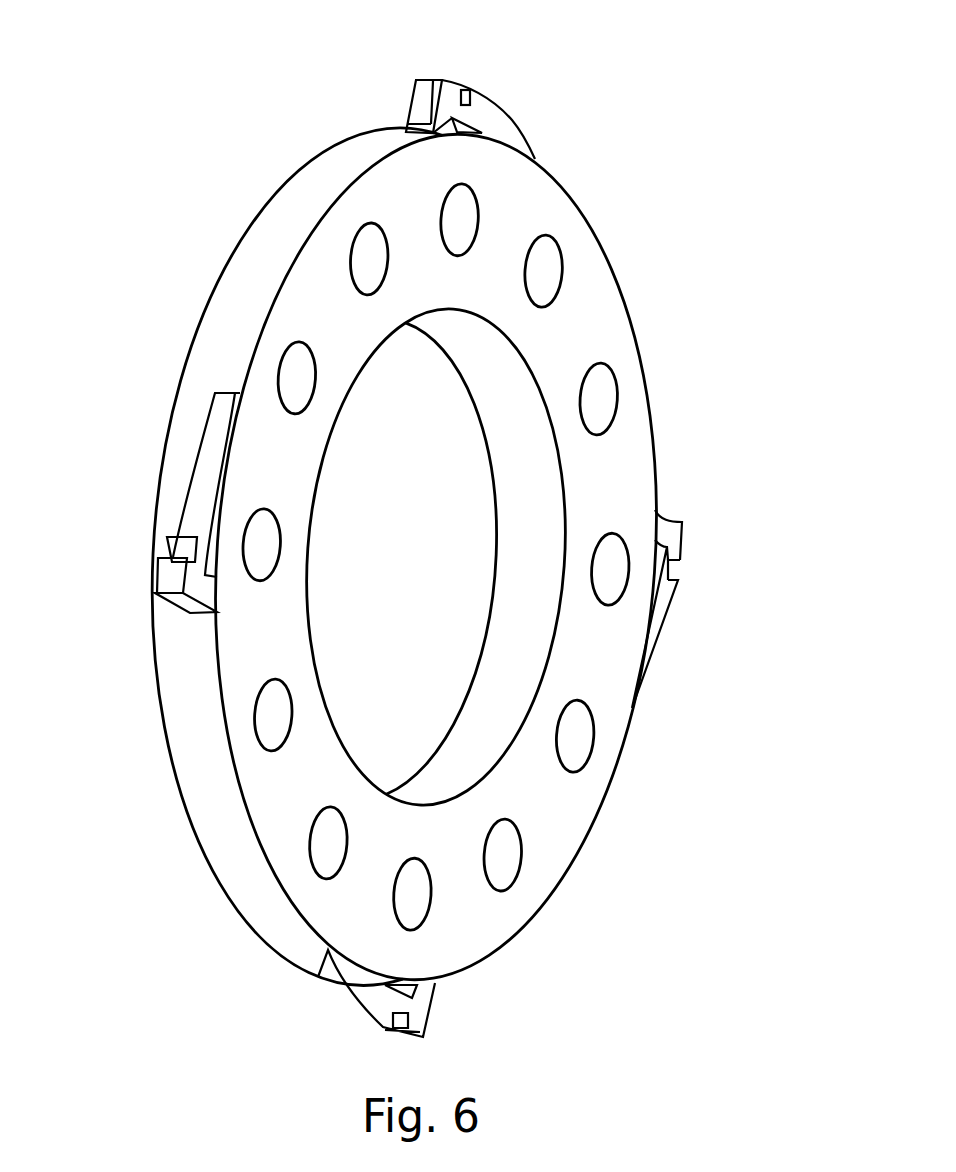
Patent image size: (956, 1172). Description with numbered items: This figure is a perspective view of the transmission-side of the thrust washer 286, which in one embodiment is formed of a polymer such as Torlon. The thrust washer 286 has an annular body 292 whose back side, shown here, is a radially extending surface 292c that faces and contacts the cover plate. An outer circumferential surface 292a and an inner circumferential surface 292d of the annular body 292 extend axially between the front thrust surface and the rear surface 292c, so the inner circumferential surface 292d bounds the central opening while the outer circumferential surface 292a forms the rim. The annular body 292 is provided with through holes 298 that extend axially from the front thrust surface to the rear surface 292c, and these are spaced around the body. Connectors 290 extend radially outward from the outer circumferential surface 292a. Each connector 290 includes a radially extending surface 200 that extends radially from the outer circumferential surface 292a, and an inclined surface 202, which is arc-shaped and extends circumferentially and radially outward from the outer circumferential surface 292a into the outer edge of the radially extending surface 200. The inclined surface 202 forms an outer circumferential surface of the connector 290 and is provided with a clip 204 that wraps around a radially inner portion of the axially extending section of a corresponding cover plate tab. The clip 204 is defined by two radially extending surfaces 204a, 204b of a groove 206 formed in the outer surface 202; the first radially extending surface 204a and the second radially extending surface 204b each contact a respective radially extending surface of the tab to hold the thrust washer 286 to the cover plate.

The thrust washer 286 is at (677, 281).
The connectors 290 is at (398, 80).
The clip 204 is at (478, 81).
The first radially extending surface 204a is at (678, 580).
The second radially extending surface 204b is at (681, 558).
The annular body 292 is at (352, 335).
The outer circumferential surface 292a is at (305, 200).
The radially extending surface 292c is at (300, 673).
The inner circumferential surface 292d is at (510, 549).
The through holes 298 is at (577, 735).
The radially extending surface 200 is at (170, 605).
The inclined surface 202 is at (168, 573).
The groove 206 is at (175, 545).